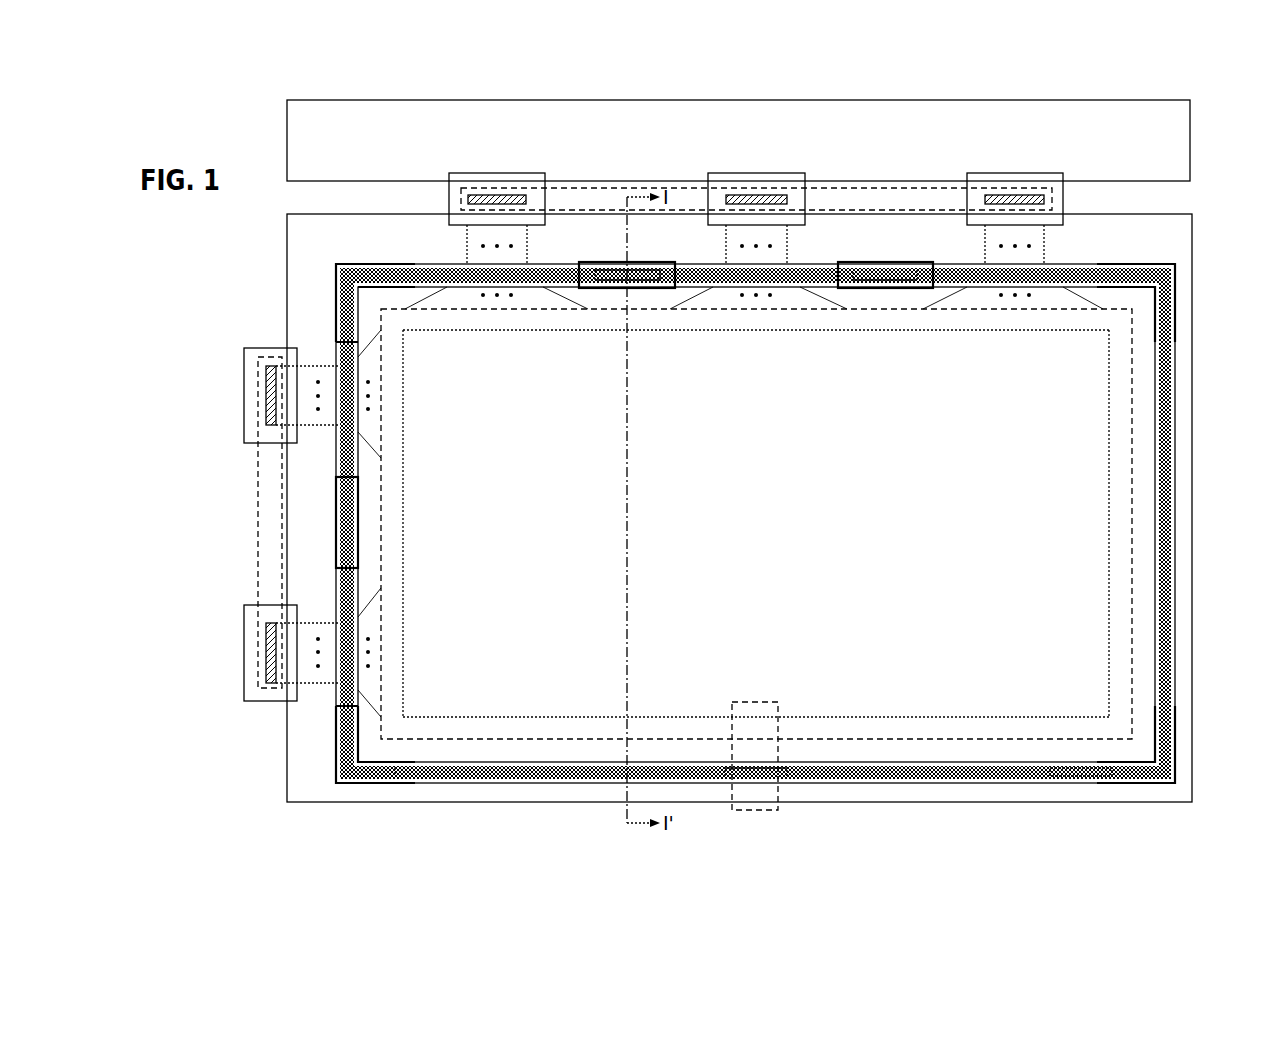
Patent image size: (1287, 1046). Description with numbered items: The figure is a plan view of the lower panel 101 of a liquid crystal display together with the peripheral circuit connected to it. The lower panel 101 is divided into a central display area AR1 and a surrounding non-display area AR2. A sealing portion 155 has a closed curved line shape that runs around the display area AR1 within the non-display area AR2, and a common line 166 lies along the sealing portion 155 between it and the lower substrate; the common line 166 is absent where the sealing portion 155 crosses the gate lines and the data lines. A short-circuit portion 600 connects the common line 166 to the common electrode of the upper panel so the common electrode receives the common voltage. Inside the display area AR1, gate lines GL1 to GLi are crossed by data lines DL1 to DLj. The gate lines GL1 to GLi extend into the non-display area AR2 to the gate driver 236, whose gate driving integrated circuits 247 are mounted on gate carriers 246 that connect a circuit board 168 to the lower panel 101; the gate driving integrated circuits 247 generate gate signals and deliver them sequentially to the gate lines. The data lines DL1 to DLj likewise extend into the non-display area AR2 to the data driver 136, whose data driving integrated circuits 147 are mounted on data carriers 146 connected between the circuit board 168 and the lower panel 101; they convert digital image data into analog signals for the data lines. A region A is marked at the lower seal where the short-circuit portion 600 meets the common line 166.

The circuit board 168 is at (1170, 141).
The lower panel 101 is at (1192, 340).
The non-display area AR2 is at (1172, 241).
The display area AR1 is at (1122, 492).
The short-circuit portion 600 is at (428, 785).
The sealing portion 155 is at (908, 778).
The common line 166 is at (598, 268).
The data driving integrated circuit 147 is at (497, 185).
The data carrier 146 is at (753, 185).
The data driver 136 is at (1012, 185).
The gate carrier 246 is at (244, 398).
The gate driving integrated circuit 247 is at (266, 650).
The gate driver 236 is at (258, 580).
The first gate line GL1 is at (510, 331).
The i-th gate line GLi is at (465, 717).
The first data line DL1 is at (404, 497).
The j-th data line DLj is at (1109, 522).
The region A is at (755, 810).